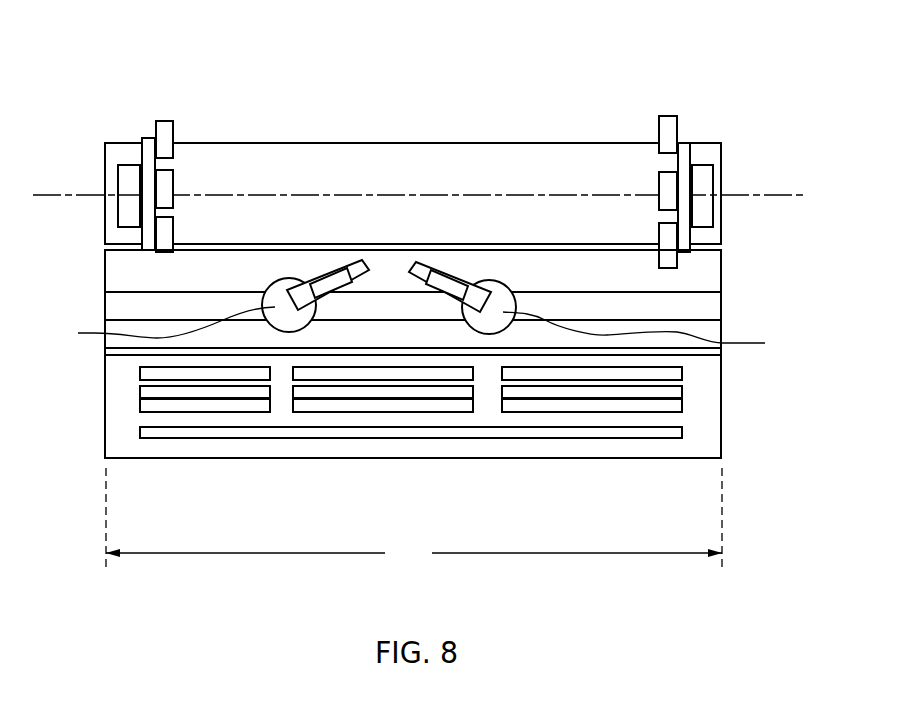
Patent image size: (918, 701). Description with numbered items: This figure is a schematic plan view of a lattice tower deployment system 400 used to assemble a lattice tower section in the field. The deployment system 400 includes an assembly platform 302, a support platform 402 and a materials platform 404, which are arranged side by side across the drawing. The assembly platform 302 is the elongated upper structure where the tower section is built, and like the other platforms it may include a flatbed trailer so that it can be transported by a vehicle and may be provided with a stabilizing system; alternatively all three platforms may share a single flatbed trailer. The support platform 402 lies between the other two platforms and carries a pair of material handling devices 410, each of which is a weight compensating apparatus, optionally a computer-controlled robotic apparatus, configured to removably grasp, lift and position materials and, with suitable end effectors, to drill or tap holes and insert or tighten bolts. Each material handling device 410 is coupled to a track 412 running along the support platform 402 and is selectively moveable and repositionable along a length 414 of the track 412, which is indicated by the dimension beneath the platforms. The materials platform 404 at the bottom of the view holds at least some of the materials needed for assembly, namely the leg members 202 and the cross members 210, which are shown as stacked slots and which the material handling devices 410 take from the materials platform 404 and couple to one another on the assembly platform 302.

The lattice tower deployment system 400 is at (428, 285).
The assembly platform 302 is at (710, 152).
The support platform 402 is at (713, 272).
The track 412 is at (710, 307).
The material handling device 410 is at (422, 331).
The materials platform 404 is at (705, 405).
The cross members 210 is at (190, 407).
The leg members 202 is at (373, 432).
The length of track 414 is at (414, 519).